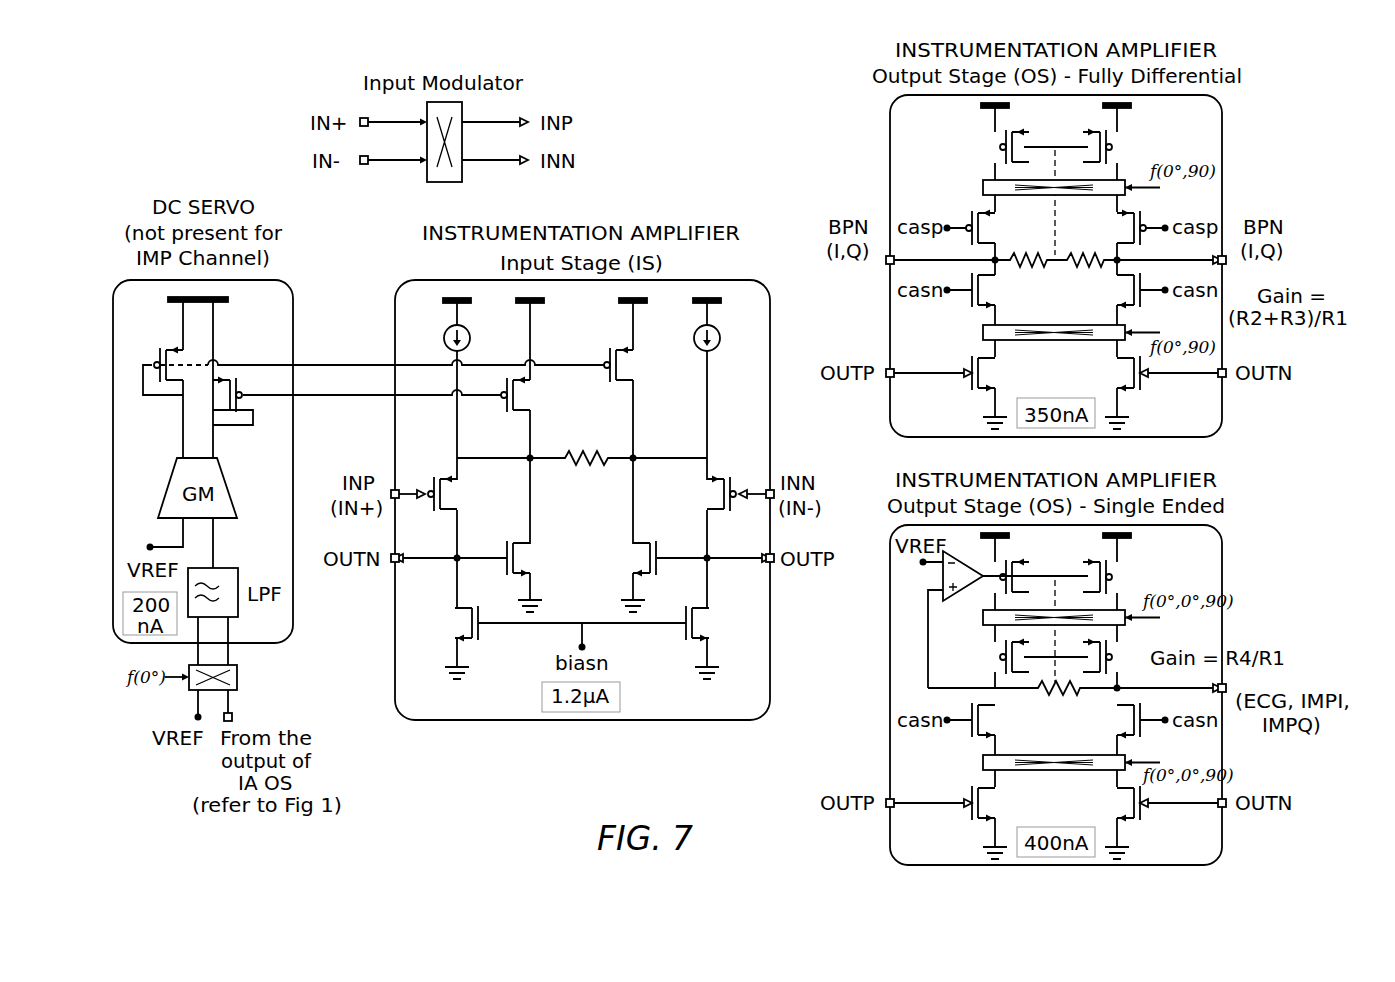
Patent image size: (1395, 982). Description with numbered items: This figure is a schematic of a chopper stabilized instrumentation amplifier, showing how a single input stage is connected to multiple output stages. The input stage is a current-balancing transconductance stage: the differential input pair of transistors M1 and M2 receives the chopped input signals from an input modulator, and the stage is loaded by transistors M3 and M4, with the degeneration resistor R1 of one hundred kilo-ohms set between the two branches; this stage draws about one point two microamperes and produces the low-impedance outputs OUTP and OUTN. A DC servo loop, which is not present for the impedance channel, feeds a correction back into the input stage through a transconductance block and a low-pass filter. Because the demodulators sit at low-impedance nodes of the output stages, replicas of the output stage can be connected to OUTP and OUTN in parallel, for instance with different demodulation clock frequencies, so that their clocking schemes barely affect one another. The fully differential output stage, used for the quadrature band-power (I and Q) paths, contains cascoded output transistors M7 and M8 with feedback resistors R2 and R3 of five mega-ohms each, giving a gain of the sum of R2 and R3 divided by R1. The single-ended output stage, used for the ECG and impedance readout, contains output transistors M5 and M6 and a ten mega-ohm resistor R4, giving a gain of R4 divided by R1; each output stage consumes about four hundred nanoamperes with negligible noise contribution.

The input transistor M1 is at (440, 494).
The input transistor M2 is at (726, 494).
The load transistor M3 is at (532, 576).
The load transistor M4 is at (632, 576).
The output transistor M5 is at (956, 822).
The output transistor M6 is at (1157, 822).
The output transistor M7 is at (956, 392).
The output transistor M8 is at (1157, 392).
The resistor R1 (100k) R1 is at (582, 444).
The resistor R2 (5M) R2 is at (1025, 283).
The resistor R3 (5M) R3 is at (1086, 283).
The resistor R4 (10M) R4 is at (1070, 711).